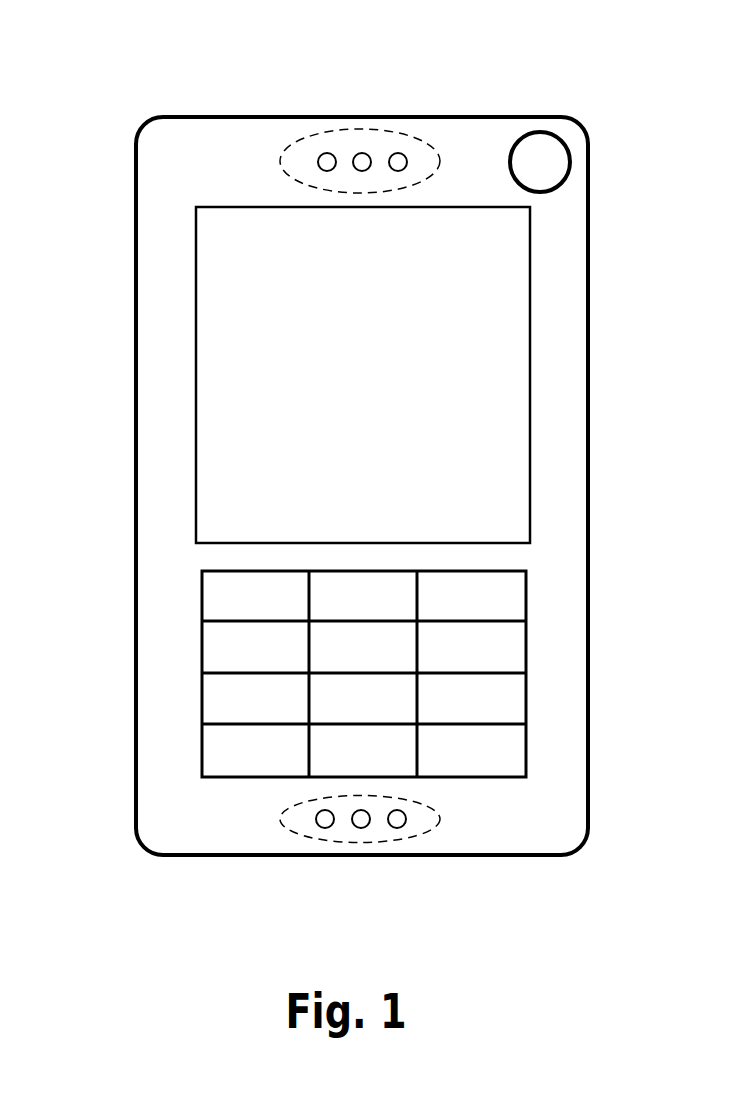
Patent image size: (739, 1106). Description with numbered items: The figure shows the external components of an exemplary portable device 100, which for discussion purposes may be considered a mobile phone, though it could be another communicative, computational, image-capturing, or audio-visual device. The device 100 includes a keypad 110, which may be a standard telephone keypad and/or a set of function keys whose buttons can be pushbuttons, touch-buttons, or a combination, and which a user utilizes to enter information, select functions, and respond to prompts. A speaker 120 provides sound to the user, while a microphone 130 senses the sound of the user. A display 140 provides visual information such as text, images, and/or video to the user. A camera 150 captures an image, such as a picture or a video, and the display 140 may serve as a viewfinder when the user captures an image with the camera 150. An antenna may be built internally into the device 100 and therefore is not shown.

The device 100 is at (192, 84).
The keypad 110 is at (217, 587).
The speaker 120 is at (382, 140).
The microphone 130 is at (343, 829).
The display 140 is at (363, 375).
The camera 150 is at (533, 140).